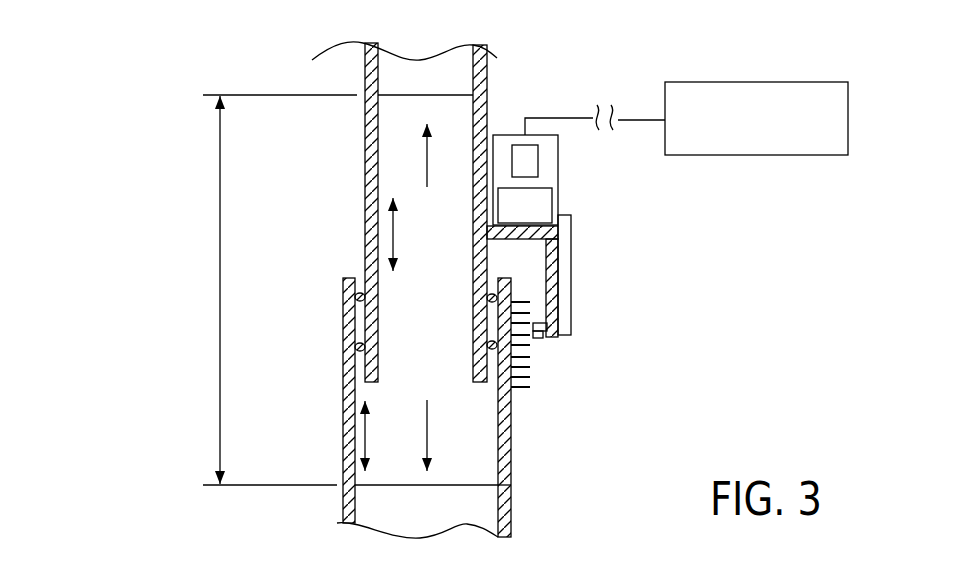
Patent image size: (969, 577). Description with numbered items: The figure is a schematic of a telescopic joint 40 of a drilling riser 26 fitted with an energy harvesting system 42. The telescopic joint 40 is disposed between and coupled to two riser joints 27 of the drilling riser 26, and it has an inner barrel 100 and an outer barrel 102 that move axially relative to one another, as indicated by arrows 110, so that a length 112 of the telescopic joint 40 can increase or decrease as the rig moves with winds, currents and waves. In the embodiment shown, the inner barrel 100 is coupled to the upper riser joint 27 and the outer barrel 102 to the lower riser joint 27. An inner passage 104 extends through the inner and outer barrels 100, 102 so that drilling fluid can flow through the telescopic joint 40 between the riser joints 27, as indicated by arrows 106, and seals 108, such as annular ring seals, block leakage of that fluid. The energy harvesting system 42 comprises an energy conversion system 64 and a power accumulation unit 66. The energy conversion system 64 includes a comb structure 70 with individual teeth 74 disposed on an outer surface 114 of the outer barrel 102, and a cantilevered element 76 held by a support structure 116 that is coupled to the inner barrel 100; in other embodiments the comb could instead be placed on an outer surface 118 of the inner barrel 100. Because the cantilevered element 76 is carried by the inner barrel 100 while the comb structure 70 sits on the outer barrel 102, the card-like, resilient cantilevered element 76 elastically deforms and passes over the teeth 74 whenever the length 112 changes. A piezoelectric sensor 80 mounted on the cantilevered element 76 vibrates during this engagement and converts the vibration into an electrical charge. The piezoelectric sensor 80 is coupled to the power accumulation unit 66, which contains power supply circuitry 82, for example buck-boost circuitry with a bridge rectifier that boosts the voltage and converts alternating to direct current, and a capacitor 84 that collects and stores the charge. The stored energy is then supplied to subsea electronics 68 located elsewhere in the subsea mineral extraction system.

The drilling riser 26 is at (122, 64).
The telescopic joint 40 is at (163, 212).
The length of the telescopic joint 112 is at (220, 290).
The inner barrel 100 is at (365, 215).
The outer barrel 102 is at (512, 450).
The outer surface of the outer barrel 114 is at (512, 510).
The seals 108 is at (345, 283).
The inner passage 104 is at (412, 335).
The arrows indicating fluid flow 106 is at (427, 160).
The arrows indicating axial movement 110 is at (393, 235).
The riser joints 27 is at (463, 83).
The power accumulation unit 66 is at (558, 178).
The capacitor 84 is at (538, 162).
The power supply circuitry 82 is at (552, 206).
The outer surface of the inner barrel 118 is at (487, 115).
The support structure 116 is at (518, 240).
The cantilevered element 76 is at (535, 320).
The piezoelectric sensor 80 is at (538, 342).
The teeth 74 is at (525, 363).
The comb structure 70 is at (528, 400).
The energy conversion system 64 is at (605, 403).
The subsea electronics 68 is at (755, 155).
The energy harvesting system 42 is at (653, 222).